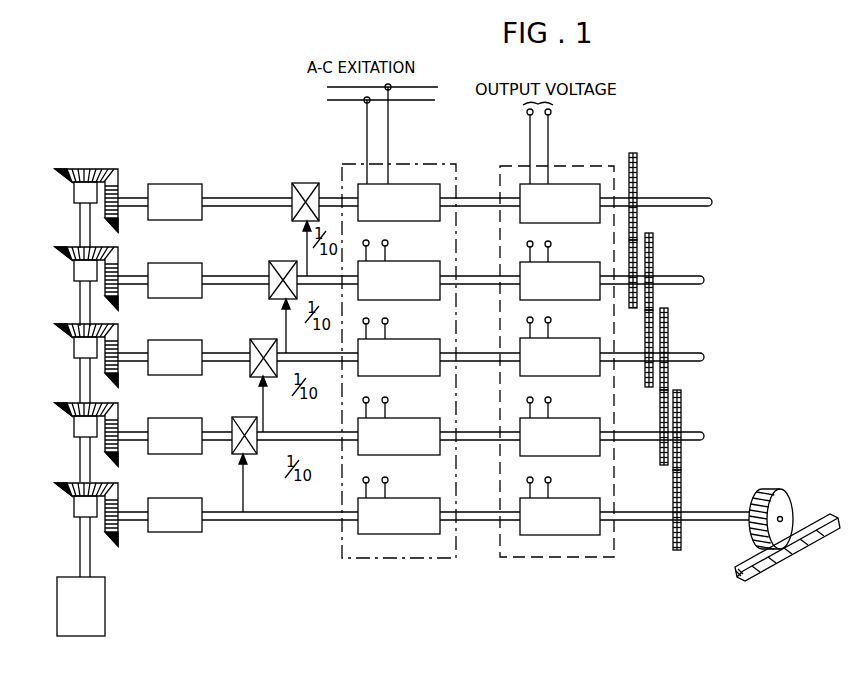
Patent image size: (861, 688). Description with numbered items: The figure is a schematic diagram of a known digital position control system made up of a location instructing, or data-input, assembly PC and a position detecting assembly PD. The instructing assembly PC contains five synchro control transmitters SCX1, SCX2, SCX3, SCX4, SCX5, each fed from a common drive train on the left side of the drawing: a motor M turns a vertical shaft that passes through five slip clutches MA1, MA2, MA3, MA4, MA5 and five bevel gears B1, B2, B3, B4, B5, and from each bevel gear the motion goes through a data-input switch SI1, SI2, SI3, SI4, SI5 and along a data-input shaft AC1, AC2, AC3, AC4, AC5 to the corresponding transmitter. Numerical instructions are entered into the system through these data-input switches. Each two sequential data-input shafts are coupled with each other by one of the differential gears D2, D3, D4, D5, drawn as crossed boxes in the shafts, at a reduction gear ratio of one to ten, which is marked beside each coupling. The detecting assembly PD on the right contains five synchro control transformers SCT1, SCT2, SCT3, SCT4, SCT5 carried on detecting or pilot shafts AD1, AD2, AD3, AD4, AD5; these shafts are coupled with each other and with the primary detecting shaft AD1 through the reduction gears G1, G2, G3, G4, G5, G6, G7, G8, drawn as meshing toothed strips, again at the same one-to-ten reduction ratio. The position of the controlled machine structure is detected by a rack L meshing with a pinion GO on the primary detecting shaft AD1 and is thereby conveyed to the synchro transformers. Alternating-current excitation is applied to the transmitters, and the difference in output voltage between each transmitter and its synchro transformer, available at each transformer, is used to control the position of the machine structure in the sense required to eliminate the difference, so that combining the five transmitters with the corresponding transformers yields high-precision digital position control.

The bevel gear B1 is at (68, 483).
The bevel gear B2 is at (68, 404).
The bevel gear B3 is at (70, 324).
The bevel gear B4 is at (70, 247).
The bevel gear B5 is at (72, 168).
The slip clutch MA1 is at (75, 505).
The slip clutch MA2 is at (75, 427).
The slip clutch MA3 is at (75, 350).
The slip clutch MA4 is at (75, 274).
The slip clutch MA5 is at (74, 193).
The data-input switch SI1 is at (175, 515).
The data-input switch SI2 is at (175, 436).
The data-input switch SI3 is at (175, 357).
The data-input switch SI4 is at (175, 280).
The data-input switch SI5 is at (175, 202).
The data-input shaft AC1 is at (212, 511).
The data-input shaft AC2 is at (222, 432).
The data-input shaft AC3 is at (226, 353).
The data-input shaft AC4 is at (232, 277).
The data-input shaft AC5 is at (241, 198).
The differential gear D2 is at (243, 416).
The differential gear D3 is at (268, 334).
The differential gear D4 is at (281, 263).
The differential gear D5 is at (308, 177).
The synchro control transmitter SCX1 is at (399, 505).
The synchro control transmitter SCX2 is at (399, 426).
The synchro control transmitter SCX3 is at (399, 347).
The synchro control transmitter SCX4 is at (399, 270).
The synchro control transmitter SCX5 is at (399, 152).
The synchro control transformer SCT1 is at (560, 506).
The synchro control transformer SCT2 is at (560, 426).
The synchro control transformer SCT3 is at (560, 346).
The synchro control transformer SCT4 is at (560, 270).
The synchro control transformer SCT5 is at (560, 166).
The primary detecting shaft AD1 is at (722, 522).
The detecting shaft AD2 is at (695, 441).
The detecting shaft AD3 is at (700, 363).
The detecting shaft AD4 is at (687, 283).
The detecting shaft AD5 is at (698, 198).
The reduction gear G1 is at (682, 506).
The reduction gear G2 is at (681, 424).
The reduction gear G3 is at (661, 468).
The reduction gear G4 is at (668, 350).
The reduction gear G5 is at (648, 388).
The reduction gear G6 is at (653, 270).
The reduction gear G7 is at (630, 303).
The reduction gear G8 is at (639, 168).
The pinion GO is at (788, 512).
The rack L is at (790, 543).
The location instructing assembly PC is at (405, 167).
The position detecting assembly PD is at (567, 167).
The motor M is at (81, 606).